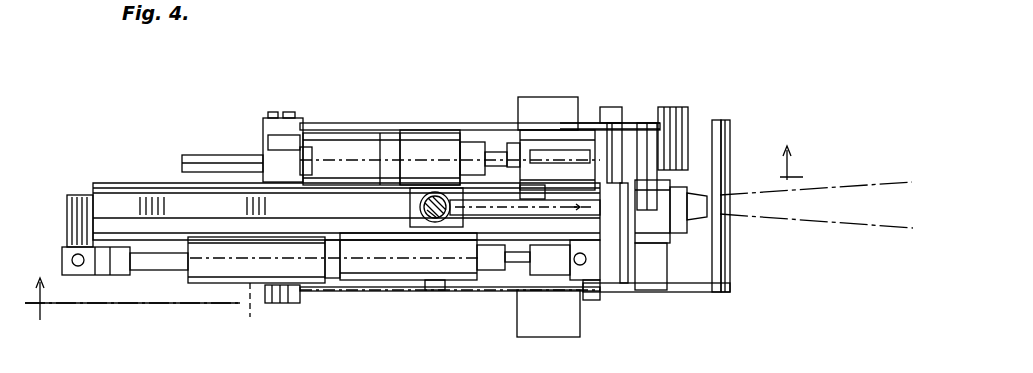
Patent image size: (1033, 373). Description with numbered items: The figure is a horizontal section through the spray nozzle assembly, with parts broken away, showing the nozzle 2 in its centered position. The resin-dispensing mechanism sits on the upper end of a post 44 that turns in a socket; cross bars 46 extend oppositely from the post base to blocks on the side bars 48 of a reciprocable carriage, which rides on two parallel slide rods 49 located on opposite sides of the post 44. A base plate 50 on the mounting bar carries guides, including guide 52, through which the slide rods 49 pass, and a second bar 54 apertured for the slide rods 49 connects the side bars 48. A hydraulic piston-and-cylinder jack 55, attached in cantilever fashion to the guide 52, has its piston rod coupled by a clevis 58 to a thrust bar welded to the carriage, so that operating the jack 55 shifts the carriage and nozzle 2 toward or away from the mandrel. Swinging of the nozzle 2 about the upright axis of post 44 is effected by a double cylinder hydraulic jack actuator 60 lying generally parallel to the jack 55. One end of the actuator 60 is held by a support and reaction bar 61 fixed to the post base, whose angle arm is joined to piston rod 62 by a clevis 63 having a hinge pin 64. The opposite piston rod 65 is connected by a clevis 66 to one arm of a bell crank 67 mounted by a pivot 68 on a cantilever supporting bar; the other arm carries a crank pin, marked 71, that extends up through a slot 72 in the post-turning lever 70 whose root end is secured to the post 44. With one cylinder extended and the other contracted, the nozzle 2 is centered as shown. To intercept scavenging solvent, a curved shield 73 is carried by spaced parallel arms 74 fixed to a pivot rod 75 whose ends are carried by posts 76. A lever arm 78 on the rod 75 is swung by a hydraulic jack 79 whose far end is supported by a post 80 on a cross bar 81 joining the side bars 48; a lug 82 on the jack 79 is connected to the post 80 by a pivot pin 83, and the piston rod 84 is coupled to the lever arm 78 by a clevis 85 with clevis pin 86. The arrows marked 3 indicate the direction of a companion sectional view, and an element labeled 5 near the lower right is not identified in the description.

The nozzle 2 is at (695, 222).
The section line 3- 3 is at (414, 233).
The lower block 5 is at (660, 255).
The post 44 is at (425, 224).
The cross bars 46 is at (430, 290).
The side bars 48 is at (338, 123).
The slide rods 49 is at (200, 160).
The base plate 50 is at (535, 130).
The guide 52 is at (385, 190).
The second bar 54 is at (418, 125).
The hydraulic piston-and-cylinder jack 55 is at (148, 192).
The clevis 58 is at (494, 182).
The double cylinder hydraulic jack actuator 60 is at (308, 277).
The support and reaction bar 61 is at (110, 207).
The piston rod 62 is at (150, 270).
The clevis 63 is at (110, 275).
The hinge pin 64 is at (78, 268).
The second piston rod 65 is at (512, 264).
The clevis 66 is at (560, 270).
The bell crank 67 is at (578, 240).
The pivot 68 is at (597, 300).
The cantilever lever 70 is at (530, 216).
The housing block 71 is at (648, 215).
The slot 72 is at (716, 122).
The shield 73 is at (728, 150).
The supporting arms 74 is at (670, 107).
The pivot rod 75 is at (645, 130).
The posts 76 is at (610, 107).
The lever arm 78 is at (612, 150).
The hydraulic jack 79 is at (355, 133).
The post 80 is at (268, 143).
The cross bar 81 is at (280, 303).
The lug 82 is at (306, 150).
The pivot pin 83 is at (285, 140).
The piston rod 84 is at (482, 150).
The clevis 85 is at (513, 143).
The clevis pin 86 is at (562, 150).